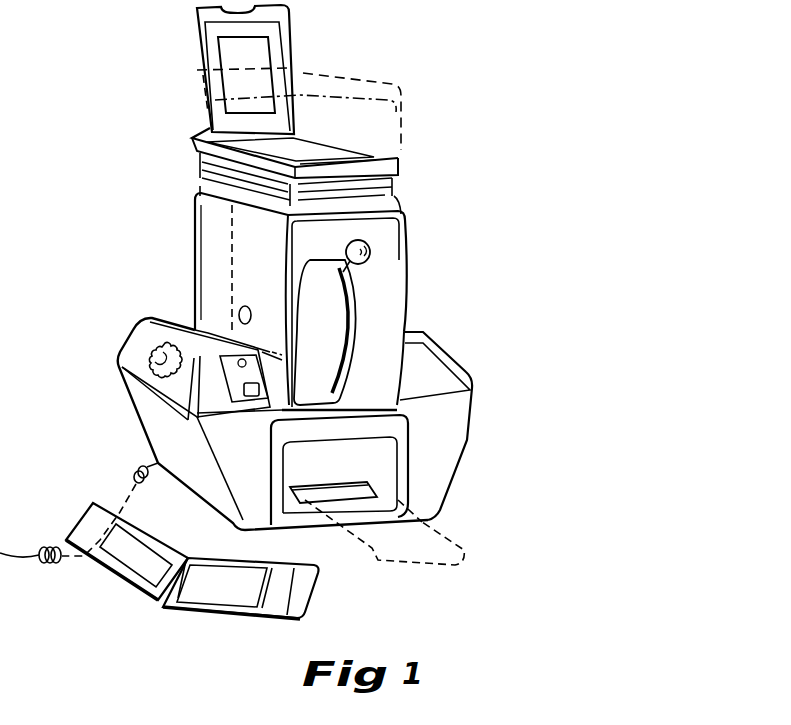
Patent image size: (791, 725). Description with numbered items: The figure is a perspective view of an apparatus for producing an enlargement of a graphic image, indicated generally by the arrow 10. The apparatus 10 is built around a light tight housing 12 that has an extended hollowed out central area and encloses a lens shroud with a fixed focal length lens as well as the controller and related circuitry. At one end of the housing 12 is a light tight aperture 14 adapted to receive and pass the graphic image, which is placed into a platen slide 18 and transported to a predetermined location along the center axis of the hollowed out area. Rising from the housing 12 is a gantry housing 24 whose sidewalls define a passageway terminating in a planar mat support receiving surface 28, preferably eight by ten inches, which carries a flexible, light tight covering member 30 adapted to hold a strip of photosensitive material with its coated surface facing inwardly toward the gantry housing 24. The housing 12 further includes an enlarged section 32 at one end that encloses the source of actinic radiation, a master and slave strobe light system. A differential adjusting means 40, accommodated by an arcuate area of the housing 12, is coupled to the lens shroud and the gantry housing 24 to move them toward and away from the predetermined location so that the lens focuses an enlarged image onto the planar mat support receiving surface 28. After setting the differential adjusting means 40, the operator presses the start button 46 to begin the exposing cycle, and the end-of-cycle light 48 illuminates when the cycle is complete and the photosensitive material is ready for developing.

The apparatus for producing an enlargement of a graphic image 10 is at (450, 254).
The light tight housing 12 is at (402, 225).
The light tight aperture 14 is at (400, 465).
The platen slide 18 is at (240, 612).
The gantry housing 24 is at (395, 168).
The planar mat support receiving surface 28 is at (362, 150).
The flexible, light tight covering member 30 is at (290, 50).
The enlarged section 32 is at (472, 381).
The differential adjusting means 40 is at (370, 265).
The start button 46 is at (248, 393).
The end-of-cycle light 48 is at (226, 358).